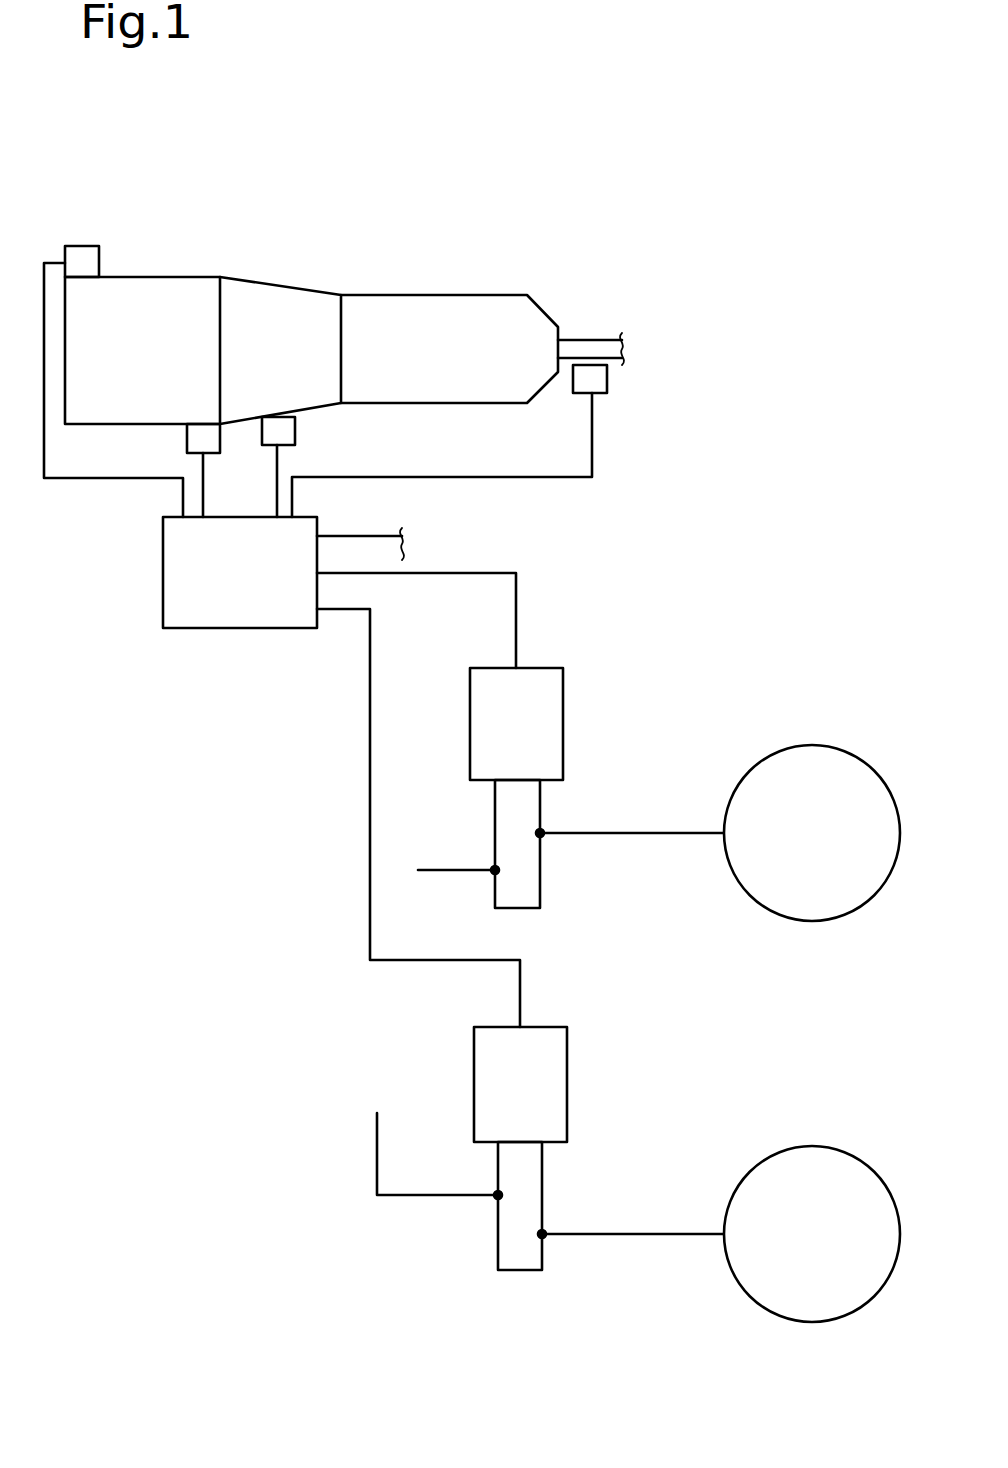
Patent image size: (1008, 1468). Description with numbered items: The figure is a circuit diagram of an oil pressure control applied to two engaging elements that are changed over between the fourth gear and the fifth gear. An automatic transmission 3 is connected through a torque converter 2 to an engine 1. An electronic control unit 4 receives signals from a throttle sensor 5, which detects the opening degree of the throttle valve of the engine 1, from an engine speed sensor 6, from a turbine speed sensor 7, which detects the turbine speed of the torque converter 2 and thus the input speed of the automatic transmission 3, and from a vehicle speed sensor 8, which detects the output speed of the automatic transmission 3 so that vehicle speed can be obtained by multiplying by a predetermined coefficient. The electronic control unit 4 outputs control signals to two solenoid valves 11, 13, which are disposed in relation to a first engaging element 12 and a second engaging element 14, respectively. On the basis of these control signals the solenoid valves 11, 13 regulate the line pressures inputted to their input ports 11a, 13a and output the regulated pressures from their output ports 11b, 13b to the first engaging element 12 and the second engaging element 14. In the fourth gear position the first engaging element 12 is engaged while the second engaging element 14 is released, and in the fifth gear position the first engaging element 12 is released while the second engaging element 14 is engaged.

The engine 1 is at (180, 277).
The torque converter 2 is at (293, 290).
The automatic transmission 3 is at (470, 295).
The electronic control unit 4 is at (163, 598).
The throttle sensor 5 is at (86, 246).
The engine speed sensor 6 is at (187, 440).
The turbine speed sensor 7 is at (296, 430).
The vehicle speed sensor 8 is at (608, 378).
The solenoid valve 11 is at (562, 668).
The input port 11a is at (448, 864).
The output port 11b is at (629, 814).
The first engaging element 12 is at (817, 746).
The solenoid valve 13 is at (560, 1027).
The input port 13a is at (436, 1135).
The output port 13b is at (630, 1216).
The second engaging element 14 is at (812, 1147).